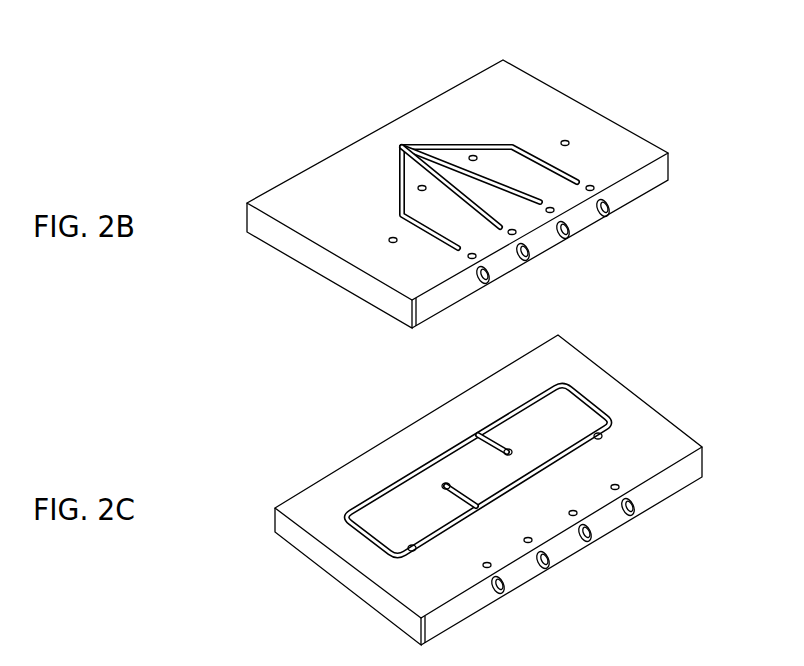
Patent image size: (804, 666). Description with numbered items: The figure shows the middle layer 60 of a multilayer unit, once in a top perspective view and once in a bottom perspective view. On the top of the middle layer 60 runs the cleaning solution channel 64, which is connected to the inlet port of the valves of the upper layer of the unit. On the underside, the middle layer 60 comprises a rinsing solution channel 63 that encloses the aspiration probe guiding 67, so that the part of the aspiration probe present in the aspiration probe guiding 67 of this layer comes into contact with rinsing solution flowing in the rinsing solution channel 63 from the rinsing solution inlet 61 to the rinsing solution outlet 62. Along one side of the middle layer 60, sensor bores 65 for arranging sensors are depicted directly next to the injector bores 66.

In FIG. 2B, the middle layer 60 is at (643, 107).
In FIG. 2C, the middle layer 60 is at (488, 478).
In FIG. 2B, the rinsing solution inlet 61 is at (418, 185).
In FIG. 2C, the rinsing solution inlet 61 is at (505, 447).
In FIG. 2B, the rinsing solution outlet 62 is at (473, 150).
In FIG. 2C, the rinsing solution outlet 62 is at (390, 453).
In FIG. 2C, the rinsing solution channel 63 is at (363, 545).
In FIG. 2B, the cleaning solution channel 64 is at (498, 145).
In FIG. 2C, the cleaning solution channel 64 is at (478, 477).
In FIG. 2B, the sensor bores 65 is at (546, 245).
In FIG. 2C, the sensor bores 65 is at (570, 547).
In FIG. 2B, the injector bores 66 is at (593, 192).
In FIG. 2C, the injector bores 66 is at (622, 490).
In FIG. 2B, the aspiration probe guiding 67 is at (563, 138).
In FIG. 2C, the aspiration probe guiding 67 is at (527, 534).